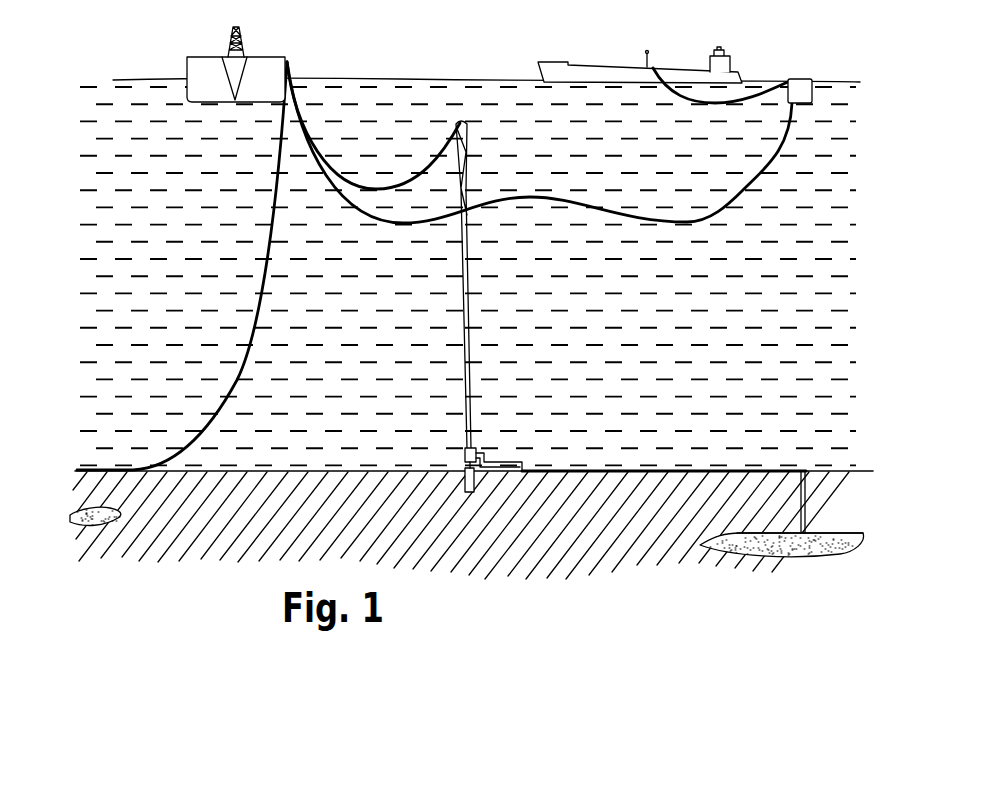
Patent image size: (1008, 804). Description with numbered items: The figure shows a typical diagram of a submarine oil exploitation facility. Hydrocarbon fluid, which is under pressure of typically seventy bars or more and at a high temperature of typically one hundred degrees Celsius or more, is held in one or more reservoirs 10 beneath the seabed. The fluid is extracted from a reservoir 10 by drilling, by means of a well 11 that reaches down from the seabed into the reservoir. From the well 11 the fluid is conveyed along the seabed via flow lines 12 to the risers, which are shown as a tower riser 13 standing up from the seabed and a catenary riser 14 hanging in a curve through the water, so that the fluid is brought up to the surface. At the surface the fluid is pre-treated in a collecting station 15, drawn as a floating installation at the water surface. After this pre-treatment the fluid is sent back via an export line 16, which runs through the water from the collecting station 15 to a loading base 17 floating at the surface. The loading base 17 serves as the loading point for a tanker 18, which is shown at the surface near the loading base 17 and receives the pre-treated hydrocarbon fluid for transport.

The reservoir 10 is at (795, 542).
The well 11 is at (808, 502).
The flow line 12 is at (592, 474).
The tower riser 13 is at (457, 403).
The catenary riser 14 is at (247, 335).
The collecting station 15 is at (208, 73).
The export line 16 is at (757, 180).
The loading base 17 is at (800, 87).
The tanker 18 is at (595, 70).